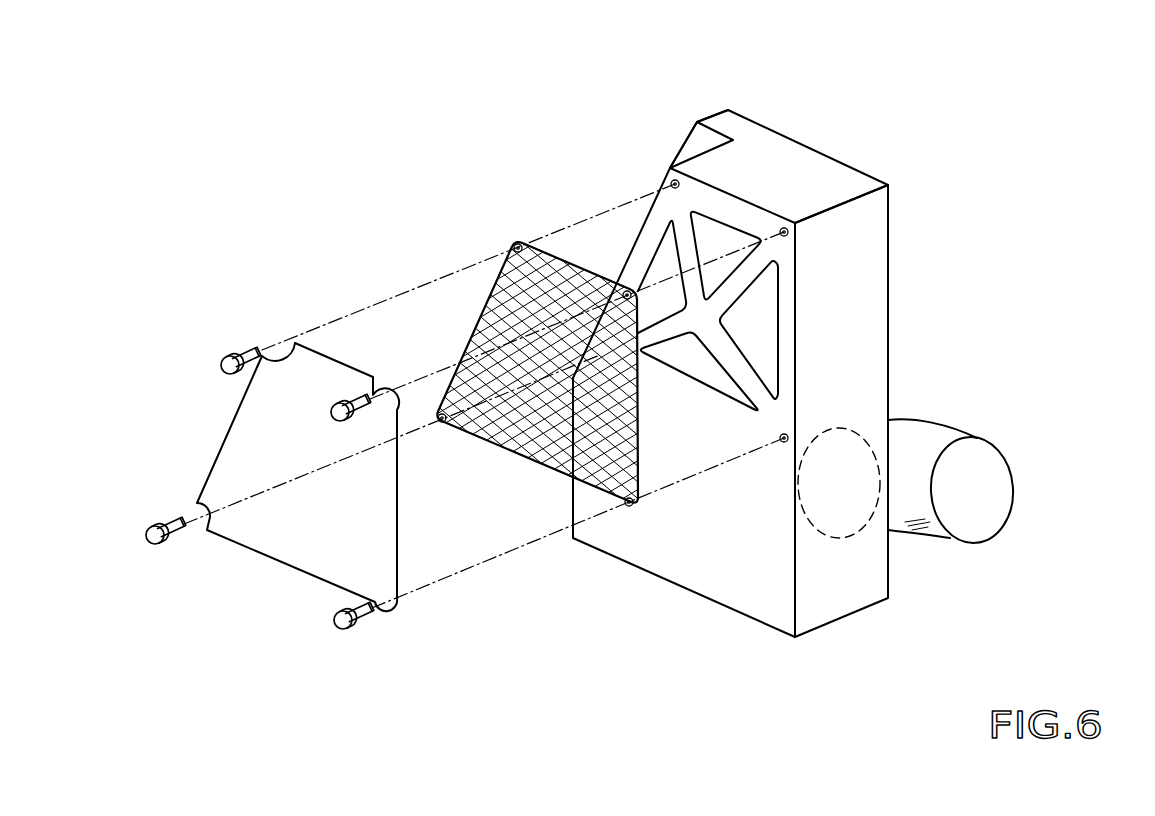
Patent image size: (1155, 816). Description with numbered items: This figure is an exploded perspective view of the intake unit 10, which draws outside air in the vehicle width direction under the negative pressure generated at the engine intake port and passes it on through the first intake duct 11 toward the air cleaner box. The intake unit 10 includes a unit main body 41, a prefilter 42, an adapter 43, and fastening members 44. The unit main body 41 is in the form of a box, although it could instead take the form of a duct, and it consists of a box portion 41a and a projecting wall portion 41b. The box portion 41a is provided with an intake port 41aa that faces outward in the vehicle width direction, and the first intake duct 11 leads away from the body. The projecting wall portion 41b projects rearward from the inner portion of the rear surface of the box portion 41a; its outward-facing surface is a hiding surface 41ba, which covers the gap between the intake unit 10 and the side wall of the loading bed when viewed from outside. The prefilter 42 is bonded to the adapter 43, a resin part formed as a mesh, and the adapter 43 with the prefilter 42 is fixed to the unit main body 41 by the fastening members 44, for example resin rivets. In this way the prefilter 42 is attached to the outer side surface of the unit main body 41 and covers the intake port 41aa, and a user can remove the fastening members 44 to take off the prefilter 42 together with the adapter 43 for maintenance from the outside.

The intake unit 10 is at (376, 110).
The first intake duct 11 is at (945, 540).
The unit main body 41 is at (882, 333).
The box portion 41a is at (825, 167).
The projecting wall portion 41b is at (729, 123).
The hiding surface 41ba is at (695, 148).
The intake port 41aa is at (667, 263).
The prefilter 42 is at (237, 425).
The adapter 43 is at (485, 282).
The fastening members 44 is at (231, 355).